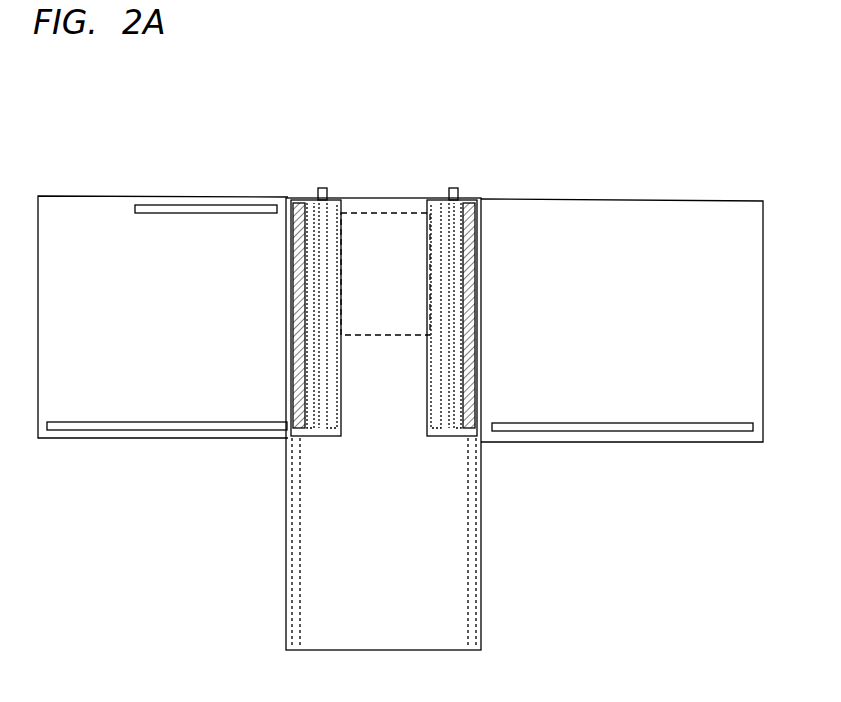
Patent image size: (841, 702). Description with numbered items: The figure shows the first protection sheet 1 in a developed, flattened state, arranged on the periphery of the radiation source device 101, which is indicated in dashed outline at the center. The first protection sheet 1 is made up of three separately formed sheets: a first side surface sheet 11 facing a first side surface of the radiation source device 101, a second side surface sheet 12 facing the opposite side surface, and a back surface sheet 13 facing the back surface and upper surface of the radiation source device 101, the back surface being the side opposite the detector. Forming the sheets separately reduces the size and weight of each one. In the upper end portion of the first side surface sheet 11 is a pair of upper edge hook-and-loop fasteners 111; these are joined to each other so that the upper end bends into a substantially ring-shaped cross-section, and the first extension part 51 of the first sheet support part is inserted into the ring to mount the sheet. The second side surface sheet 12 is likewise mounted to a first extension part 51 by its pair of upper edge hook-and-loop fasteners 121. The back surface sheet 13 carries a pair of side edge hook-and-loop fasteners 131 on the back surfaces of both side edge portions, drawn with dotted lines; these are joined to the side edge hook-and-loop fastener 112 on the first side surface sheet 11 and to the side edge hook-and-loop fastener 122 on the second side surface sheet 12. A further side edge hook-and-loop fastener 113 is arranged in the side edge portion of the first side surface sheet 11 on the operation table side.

The first protection sheet 1 is at (667, 158).
The first side surface sheet 11 is at (163, 317).
The second side surface sheet 12 is at (622, 320).
The back surface sheet 13 is at (383, 424).
The radiation source device 101 is at (385, 274).
The upper edge hook-and-loop fasteners 111 is at (296, 212).
The side edge hook-and-loop fastener 112 is at (194, 432).
The side edge hook-and-loop fastener 113 is at (182, 206).
The upper edge hook-and-loop fasteners 121 is at (432, 212).
The side edge hook-and-loop fastener 122 is at (482, 441).
The side edge hook-and-loop fasteners 131 is at (297, 633).
The first extension part 51 is at (322, 200).